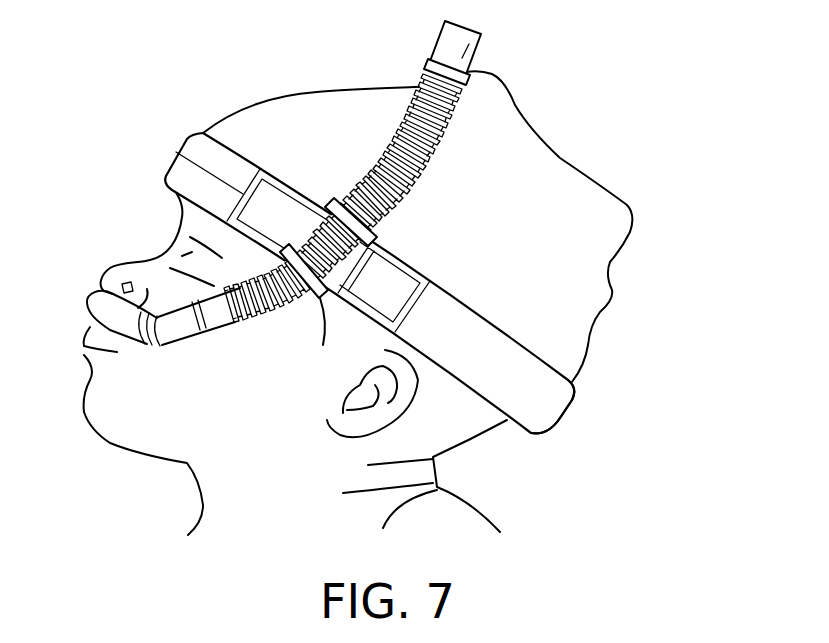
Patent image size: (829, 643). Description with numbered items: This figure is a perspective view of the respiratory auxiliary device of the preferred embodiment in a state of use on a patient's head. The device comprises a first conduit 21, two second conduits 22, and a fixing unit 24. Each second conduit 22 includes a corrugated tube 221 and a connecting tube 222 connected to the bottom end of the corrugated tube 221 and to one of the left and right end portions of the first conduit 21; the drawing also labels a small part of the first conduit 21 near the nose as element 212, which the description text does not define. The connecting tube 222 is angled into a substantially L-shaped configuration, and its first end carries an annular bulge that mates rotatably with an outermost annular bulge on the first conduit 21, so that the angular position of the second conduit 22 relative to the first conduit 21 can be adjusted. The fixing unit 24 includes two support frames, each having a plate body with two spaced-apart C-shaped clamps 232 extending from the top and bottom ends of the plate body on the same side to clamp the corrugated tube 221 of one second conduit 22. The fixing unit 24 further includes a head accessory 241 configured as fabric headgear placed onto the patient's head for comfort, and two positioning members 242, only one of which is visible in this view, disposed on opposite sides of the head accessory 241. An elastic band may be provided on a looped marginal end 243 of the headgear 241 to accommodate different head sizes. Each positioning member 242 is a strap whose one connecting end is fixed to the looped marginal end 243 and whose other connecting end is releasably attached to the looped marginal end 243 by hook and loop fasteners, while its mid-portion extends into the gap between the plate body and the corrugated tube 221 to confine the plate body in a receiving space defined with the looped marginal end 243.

The first conduit 21 is at (84, 298).
The mask tab 212 is at (121, 285).
The second conduit 22 is at (379, 171).
The corrugated tube 221 is at (440, 132).
The connecting tube 222 is at (173, 331).
The C-shaped clamp 232 is at (381, 237).
The fixing unit 24 is at (268, 94).
The head accessory 241 is at (342, 110).
The positioning member 242 is at (176, 152).
The looped marginal end 243 is at (545, 402).